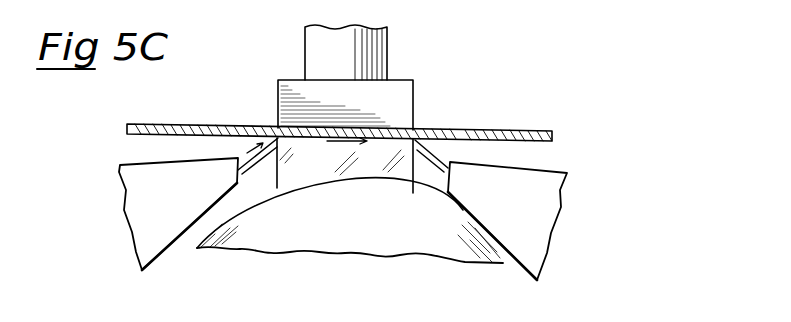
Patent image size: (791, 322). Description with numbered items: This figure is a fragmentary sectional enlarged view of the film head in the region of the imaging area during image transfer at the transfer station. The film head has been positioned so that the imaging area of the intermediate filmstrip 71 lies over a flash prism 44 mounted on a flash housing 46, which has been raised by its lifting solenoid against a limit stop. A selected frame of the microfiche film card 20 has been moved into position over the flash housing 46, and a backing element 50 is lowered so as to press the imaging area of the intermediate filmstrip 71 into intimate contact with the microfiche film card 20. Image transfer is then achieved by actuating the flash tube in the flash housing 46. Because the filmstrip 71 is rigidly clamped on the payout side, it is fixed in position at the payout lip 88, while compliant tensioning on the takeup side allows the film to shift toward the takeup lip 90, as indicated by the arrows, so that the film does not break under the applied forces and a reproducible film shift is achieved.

The backing element 50 is at (413, 86).
The microfiche film card 20 is at (497, 131).
The intermediate filmstrip 71 is at (433, 153).
The flash prism 44 is at (328, 171).
The flash housing 46 is at (200, 235).
The takeup lip 90 is at (218, 198).
The payout lip 88 is at (452, 200).